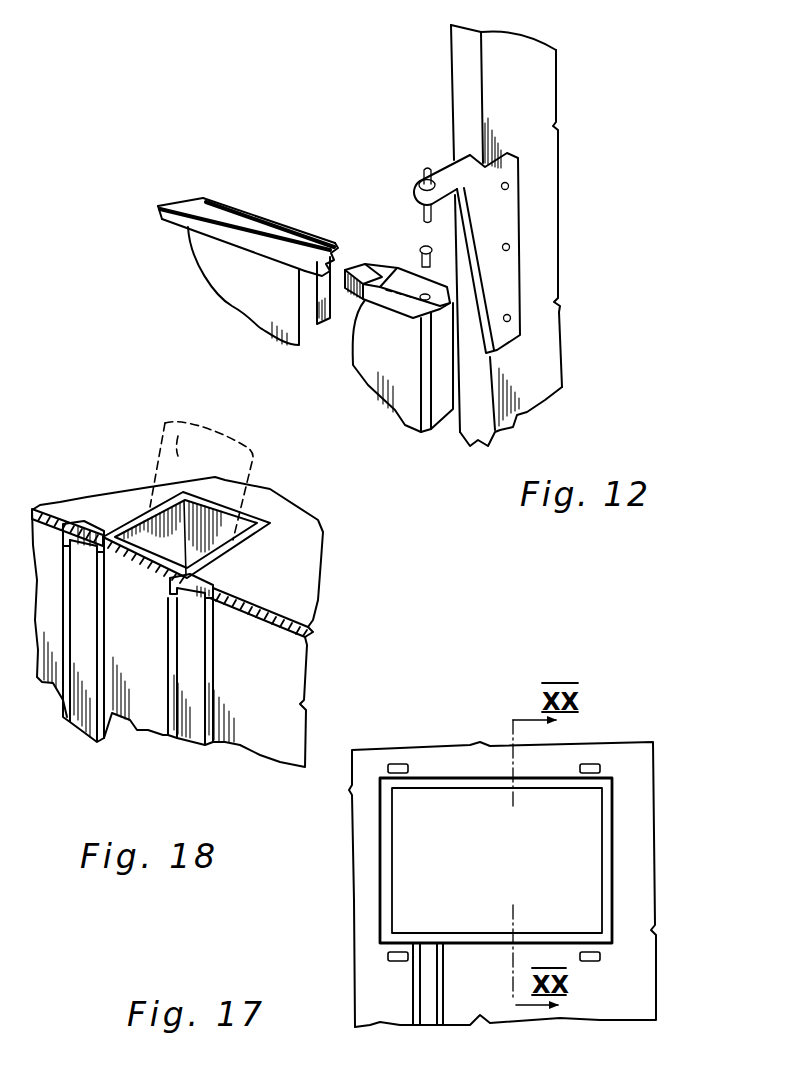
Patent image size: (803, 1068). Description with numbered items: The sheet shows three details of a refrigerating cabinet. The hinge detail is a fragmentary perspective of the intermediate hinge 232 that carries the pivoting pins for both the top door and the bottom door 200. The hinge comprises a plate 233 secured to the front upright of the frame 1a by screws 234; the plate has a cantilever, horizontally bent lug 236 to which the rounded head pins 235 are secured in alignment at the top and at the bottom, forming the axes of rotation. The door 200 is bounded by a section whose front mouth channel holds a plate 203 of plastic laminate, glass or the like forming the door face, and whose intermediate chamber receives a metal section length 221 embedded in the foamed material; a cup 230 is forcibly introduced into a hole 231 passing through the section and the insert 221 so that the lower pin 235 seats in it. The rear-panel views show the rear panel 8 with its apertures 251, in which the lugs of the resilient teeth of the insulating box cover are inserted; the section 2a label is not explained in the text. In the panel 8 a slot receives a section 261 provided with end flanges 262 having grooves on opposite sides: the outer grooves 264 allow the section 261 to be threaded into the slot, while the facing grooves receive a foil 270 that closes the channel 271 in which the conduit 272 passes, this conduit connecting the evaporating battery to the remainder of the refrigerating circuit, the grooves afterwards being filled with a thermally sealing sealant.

In FIG. 12, the frame 1a is at (567, 88).
In FIG. 12, the door 200 is at (248, 229).
In FIG. 12, the rail 2a is at (268, 213).
In FIG. 12, the plate 203 is at (235, 277).
In FIG. 12, the section length (metal insert) 221 is at (358, 297).
In FIG. 12, the cup 230 is at (408, 316).
In FIG. 17, the cup 230 is at (407, 892).
In FIG. 12, the hole 231 is at (421, 262).
In FIG. 12, the intermediate hinge 232 is at (526, 203).
In FIG. 12, the plate 233 is at (510, 282).
In FIG. 12, the screws 234 is at (511, 320).
In FIG. 12, the rounded head pins 235 is at (423, 176).
In FIG. 12, the horizontally bent lug 236 is at (445, 178).
In FIG. 18, the rear panel 8 is at (292, 682).
In FIG. 17, the rear panel 8 is at (651, 783).
In FIG. 17, the apertures 251 is at (591, 765).
In FIG. 18, the section 261 is at (240, 528).
In FIG. 18, the end flanges 262 is at (92, 717).
In FIG. 18, the outer grooves 264 is at (280, 593).
In FIG. 18, the foil 270 is at (157, 710).
In FIG. 18, the channel 271 is at (202, 562).
In FIG. 18, the conduit 272 is at (200, 466).